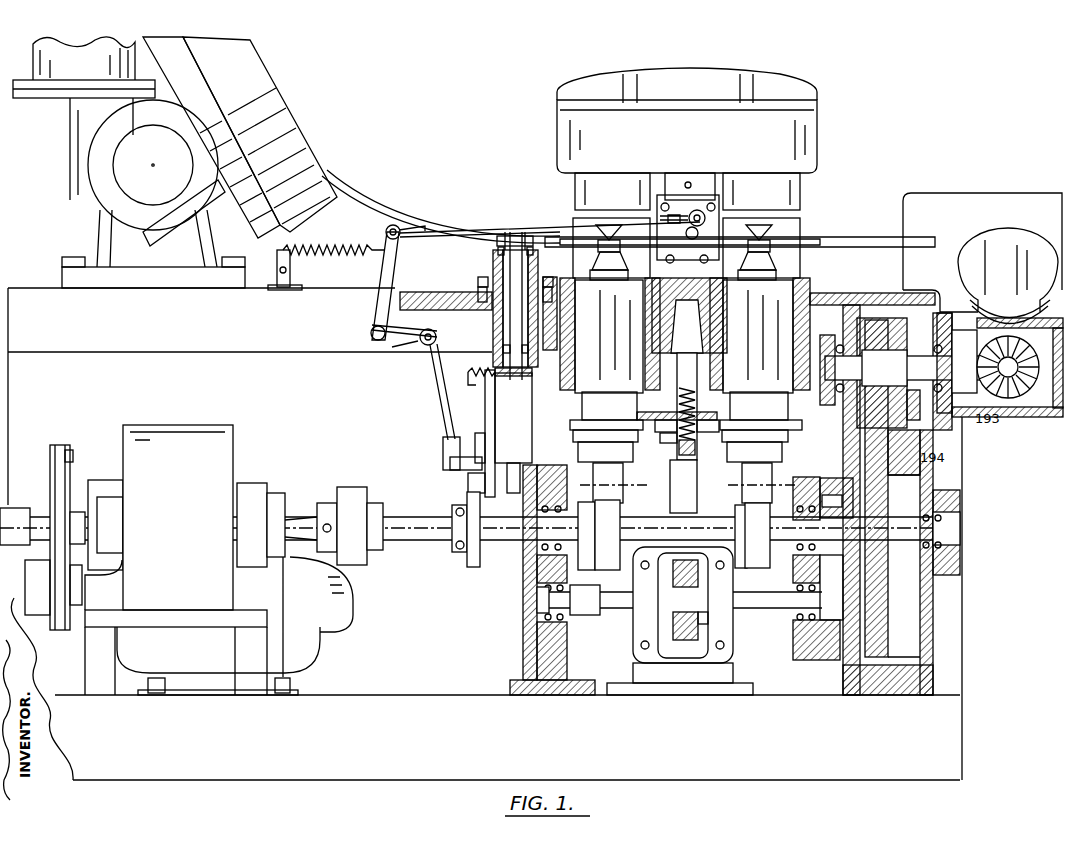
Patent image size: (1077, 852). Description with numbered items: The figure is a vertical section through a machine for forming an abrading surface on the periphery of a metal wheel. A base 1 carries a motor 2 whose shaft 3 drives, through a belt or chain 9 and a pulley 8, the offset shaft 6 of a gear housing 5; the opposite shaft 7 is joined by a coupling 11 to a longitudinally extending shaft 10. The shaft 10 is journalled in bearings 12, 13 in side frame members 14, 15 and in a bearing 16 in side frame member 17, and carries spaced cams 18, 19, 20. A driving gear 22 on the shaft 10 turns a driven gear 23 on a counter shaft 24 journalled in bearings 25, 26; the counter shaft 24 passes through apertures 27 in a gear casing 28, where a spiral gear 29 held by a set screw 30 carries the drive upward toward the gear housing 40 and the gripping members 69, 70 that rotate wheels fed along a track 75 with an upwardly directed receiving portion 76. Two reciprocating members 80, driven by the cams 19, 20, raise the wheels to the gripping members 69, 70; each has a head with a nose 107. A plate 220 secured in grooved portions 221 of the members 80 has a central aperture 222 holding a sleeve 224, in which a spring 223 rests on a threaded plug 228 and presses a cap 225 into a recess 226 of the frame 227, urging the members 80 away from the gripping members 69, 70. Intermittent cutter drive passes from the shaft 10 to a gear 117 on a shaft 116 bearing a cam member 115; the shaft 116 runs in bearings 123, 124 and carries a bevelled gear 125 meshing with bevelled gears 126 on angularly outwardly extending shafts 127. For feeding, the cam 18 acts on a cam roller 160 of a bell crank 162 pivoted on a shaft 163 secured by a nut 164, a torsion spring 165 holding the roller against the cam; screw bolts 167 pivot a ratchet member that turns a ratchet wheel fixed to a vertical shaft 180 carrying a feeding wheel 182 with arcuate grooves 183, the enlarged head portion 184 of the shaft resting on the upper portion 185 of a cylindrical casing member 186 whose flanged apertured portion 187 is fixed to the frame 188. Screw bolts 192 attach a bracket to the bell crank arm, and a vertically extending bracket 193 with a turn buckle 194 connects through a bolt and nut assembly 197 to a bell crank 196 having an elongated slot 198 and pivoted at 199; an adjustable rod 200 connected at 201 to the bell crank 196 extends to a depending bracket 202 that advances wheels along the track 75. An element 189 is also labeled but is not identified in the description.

The base 1 is at (965, 757).
The motor 2 is at (295, 500).
The shaft 3 is at (72, 575).
The gear housing 5 is at (178, 430).
The shaft 6 is at (78, 512).
The shaft 7 is at (318, 503).
The pulley 8 is at (72, 450).
The belt or chain 9 is at (64, 445).
The longitudinally extending shaft 10 is at (410, 522).
The coupling 11 is at (370, 490).
The bearing 12 is at (528, 572).
The bearing 13 is at (793, 565).
The side frame member 14 is at (537, 665).
The side frame member 15 is at (805, 665).
The bearing 16 is at (960, 505).
The side frame member 17 is at (934, 612).
The cam 18 is at (474, 560).
The cam 19 is at (605, 570).
The cam 20 is at (755, 568).
The driving gear 22 is at (830, 478).
The driven gear 23 is at (828, 615).
The counter shaft 24 is at (607, 610).
The bearing 25 is at (540, 625).
The bearing 26 is at (795, 628).
The apertures 27 is at (615, 608).
The gear casing 28 is at (640, 655).
The spiral gear 29 is at (680, 632).
The set screw 30 is at (708, 622).
The gear housing 40 is at (817, 144).
The gripping member 69 is at (610, 222).
The gripping member 70 is at (758, 228).
The track 75 is at (840, 240).
The angularly upward portion 76 is at (372, 208).
The reciprocating member 80 is at (793, 385).
The nose 107 is at (754, 258).
The cam member 115 is at (920, 405).
The shaft 116 is at (895, 345).
The gear 117 is at (876, 345).
The bearing 123 is at (840, 395).
The bearing 124 is at (930, 315).
The bevelled gear 125 is at (965, 330).
The bevelled gears 126 is at (1035, 417).
The shafts 127 is at (1008, 371).
The cam roller 160 is at (468, 487).
The bell crank 162 is at (485, 428).
The shaft 163 is at (532, 440).
The nut 164 is at (475, 445).
The torsion spring 165 is at (512, 481).
The screw bolts 167 is at (477, 365).
The vertically extending shaft 180 is at (510, 330).
The feeding wheel 182 is at (515, 232).
The arcuate grooves 183 is at (527, 236).
The enlarged head portion 184 is at (498, 253).
The upper portion 185 is at (547, 270).
The cylindrical casing member 186 is at (490, 332).
The flanged apertured portion 187 is at (478, 283).
The frame 188 is at (412, 292).
The bolt 189 is at (478, 277).
The screw bolts 192 is at (888, 595).
The vertically extending bracket 193 is at (424, 345).
The turn buckle 194 is at (440, 400).
The bell crank 196 is at (372, 312).
The bolt and nut assembly 197 is at (392, 347).
The elongated slot 198 is at (437, 331).
The pivot 199 is at (371, 336).
The adjustable rod 200 is at (462, 228).
The connection point 201 is at (386, 231).
The depending bracket 202 is at (688, 229).
The plate 220 is at (677, 405).
The grooved portions 221 is at (663, 447).
The central aperture 222 is at (663, 429).
The spring 223 is at (700, 400).
The sleeve 224 is at (706, 429).
The cap 225 is at (697, 365).
The recess 226 is at (686, 345).
The frame 227 is at (722, 330).
The threaded plug 228 is at (697, 450).